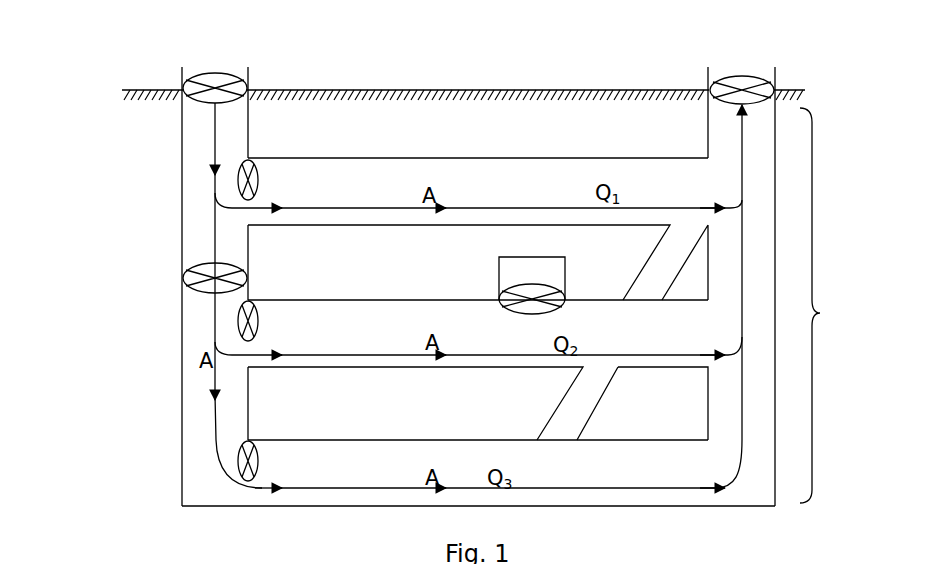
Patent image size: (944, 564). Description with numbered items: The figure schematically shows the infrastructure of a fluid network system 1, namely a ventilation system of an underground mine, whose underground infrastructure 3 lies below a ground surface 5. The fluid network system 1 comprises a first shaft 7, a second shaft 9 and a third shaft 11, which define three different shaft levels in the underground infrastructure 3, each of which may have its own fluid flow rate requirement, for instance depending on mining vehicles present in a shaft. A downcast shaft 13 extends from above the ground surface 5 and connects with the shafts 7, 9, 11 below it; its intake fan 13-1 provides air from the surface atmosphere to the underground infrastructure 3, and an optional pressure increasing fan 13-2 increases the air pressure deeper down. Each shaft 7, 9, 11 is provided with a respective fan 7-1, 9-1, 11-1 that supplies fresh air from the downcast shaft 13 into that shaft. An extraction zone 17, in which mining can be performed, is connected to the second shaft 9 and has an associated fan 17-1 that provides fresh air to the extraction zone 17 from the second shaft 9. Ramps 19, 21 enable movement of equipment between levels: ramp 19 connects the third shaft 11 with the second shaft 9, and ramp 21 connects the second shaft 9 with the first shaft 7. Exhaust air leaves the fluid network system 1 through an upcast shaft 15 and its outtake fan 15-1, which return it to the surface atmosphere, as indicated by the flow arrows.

The fluid network system 1 is at (677, 47).
The underground infrastructure 3 is at (814, 305).
The ground surface 5 is at (133, 90).
The first shaft 7 is at (300, 158).
The fan 7-1 is at (252, 159).
The second shaft 9 is at (290, 300).
The fan 9-1 is at (247, 302).
The third shaft 11 is at (338, 440).
The fan 11-1 is at (236, 478).
The downcast shaft 13 is at (182, 184).
The intake fan 13-1 is at (197, 74).
The pressure increasing fan 13-2 is at (183, 278).
The upcast shaft 15 is at (775, 208).
The outtake fan 15-1 is at (745, 77).
The extraction zone 17 is at (499, 266).
The fan 17-1 is at (567, 297).
The ramp 19 is at (563, 397).
The ramp 21 is at (658, 243).